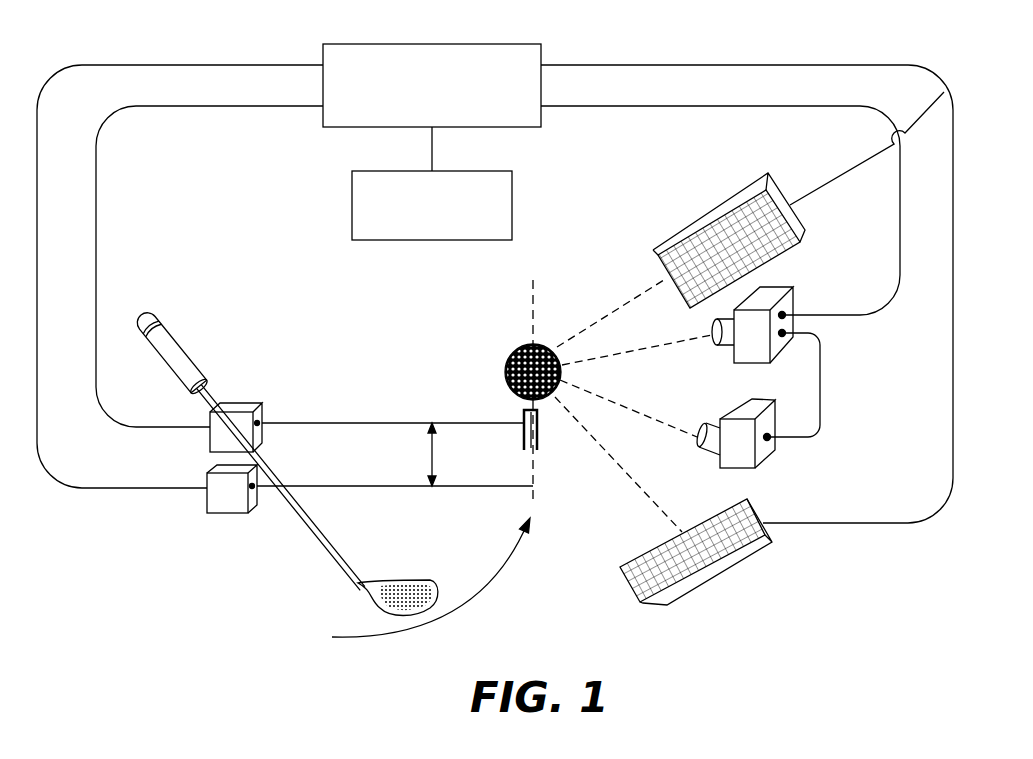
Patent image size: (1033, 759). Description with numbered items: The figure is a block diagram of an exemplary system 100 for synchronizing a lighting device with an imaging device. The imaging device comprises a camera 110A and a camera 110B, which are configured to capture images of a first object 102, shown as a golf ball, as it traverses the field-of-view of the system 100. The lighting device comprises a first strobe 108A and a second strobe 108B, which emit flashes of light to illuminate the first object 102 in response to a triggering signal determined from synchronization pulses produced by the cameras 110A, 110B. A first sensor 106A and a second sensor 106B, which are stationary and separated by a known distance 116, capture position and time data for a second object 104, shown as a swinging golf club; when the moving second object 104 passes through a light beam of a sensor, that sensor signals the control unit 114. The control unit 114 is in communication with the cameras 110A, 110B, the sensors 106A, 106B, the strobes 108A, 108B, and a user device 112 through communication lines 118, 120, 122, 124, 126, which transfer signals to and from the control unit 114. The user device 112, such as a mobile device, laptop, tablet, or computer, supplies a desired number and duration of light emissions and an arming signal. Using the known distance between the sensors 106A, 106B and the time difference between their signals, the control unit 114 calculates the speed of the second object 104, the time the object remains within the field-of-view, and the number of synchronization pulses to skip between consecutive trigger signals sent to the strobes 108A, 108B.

The system 100 is at (728, 664).
The first object 102 is at (505, 372).
The second object 104 is at (418, 583).
The first sensor 106A is at (210, 422).
The second sensor 106B is at (207, 477).
The first strobe 108A is at (757, 175).
The second strobe 108B is at (772, 546).
The camera 110A is at (788, 287).
The camera 110B is at (760, 400).
The user device 112 is at (515, 205).
The control unit 114 is at (340, 130).
The distance 116 is at (432, 457).
The communication line 118 is at (697, 65).
The communication line 120 is at (694, 107).
The communication line 122 is at (232, 107).
The communication line 124 is at (205, 65).
The communication line 126 is at (432, 150).